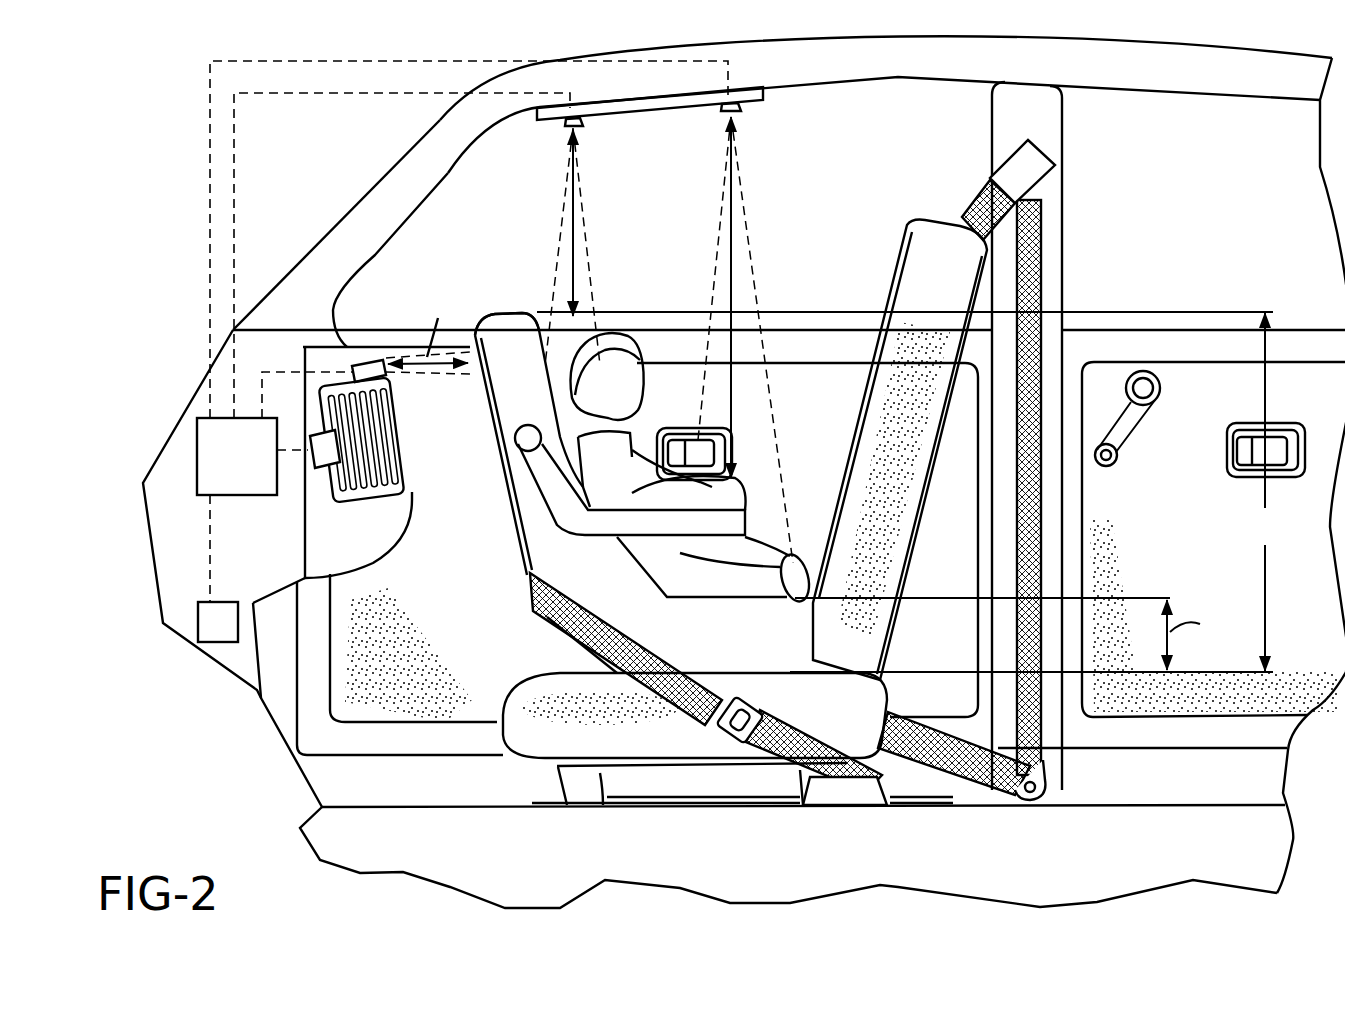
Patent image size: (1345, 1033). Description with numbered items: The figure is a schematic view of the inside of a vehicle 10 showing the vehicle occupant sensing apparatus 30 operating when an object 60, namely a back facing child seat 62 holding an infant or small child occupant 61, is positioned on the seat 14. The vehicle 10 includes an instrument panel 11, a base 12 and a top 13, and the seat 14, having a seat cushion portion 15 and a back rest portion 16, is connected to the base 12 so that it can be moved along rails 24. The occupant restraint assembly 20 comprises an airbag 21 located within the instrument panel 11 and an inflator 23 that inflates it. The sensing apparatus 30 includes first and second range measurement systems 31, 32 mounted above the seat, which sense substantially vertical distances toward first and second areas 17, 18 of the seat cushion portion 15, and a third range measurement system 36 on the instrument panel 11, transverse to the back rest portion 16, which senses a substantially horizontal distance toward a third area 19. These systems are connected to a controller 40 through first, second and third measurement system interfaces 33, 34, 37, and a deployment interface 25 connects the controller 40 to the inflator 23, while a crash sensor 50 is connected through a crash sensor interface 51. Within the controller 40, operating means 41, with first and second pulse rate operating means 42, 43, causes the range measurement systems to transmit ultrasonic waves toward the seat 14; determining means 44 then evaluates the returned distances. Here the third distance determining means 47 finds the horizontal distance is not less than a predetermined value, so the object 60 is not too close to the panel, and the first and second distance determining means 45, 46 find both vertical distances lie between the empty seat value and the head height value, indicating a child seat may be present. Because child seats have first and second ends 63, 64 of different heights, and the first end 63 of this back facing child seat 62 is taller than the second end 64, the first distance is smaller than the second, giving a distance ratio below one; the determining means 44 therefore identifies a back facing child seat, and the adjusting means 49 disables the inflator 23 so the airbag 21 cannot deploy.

The vehicle 10 is at (155, 170).
The instrument panel 11 is at (343, 347).
The base 12 is at (475, 808).
The top 13 is at (857, 58).
The seat 14 is at (696, 478).
The seat cushion portion 15 is at (680, 750).
The back rest portion 16 is at (925, 250).
The first area 17 is at (520, 671).
The second area 18 is at (792, 655).
The third area 19 is at (848, 342).
The occupant restraint assembly 20 is at (412, 556).
The airbag 21 is at (392, 432).
The inflator 23 is at (325, 450).
The rails 24 is at (748, 808).
The deployment interface 25 is at (293, 453).
The vehicle occupant sensing apparatus 30 is at (527, 325).
The first range measurement system 31 is at (568, 125).
The second range measurement system 32 is at (745, 105).
The first measurement system interface 33 is at (234, 245).
The second measurement system interface 34 is at (210, 272).
The third range measurement system 36 is at (384, 357).
The third measurement system interface 37 is at (296, 345).
The controller 40 is at (222, 468).
The operating means 41 is at (197, 428).
The first pulse rate operating means 42 is at (197, 432).
The second pulse rate operating means 43 is at (197, 440).
The determining means 44 is at (197, 447).
The first distance determining means 45 is at (197, 456).
The second distance determining means 46 is at (197, 484).
The third distance determining means 47 is at (205, 495).
The adjusting means 49 is at (243, 495).
The crash sensor 50 is at (212, 625).
The crash sensor interface 51 is at (210, 580).
The object 60 is at (608, 470).
The occupant 61 is at (613, 343).
The child seat 62 is at (590, 586).
The first end 63 is at (518, 333).
The second end 64 is at (790, 632).